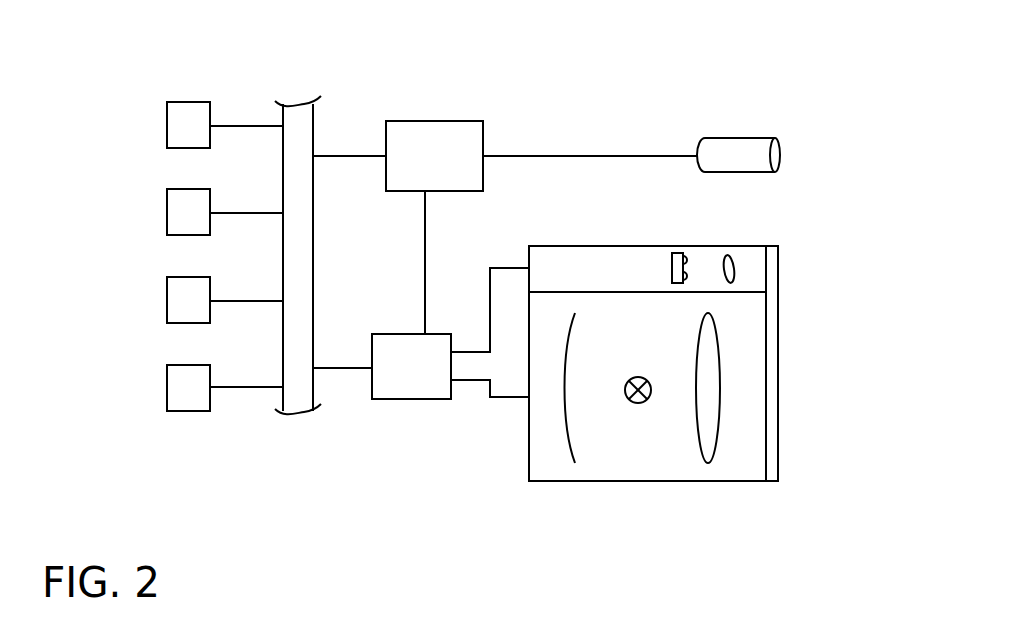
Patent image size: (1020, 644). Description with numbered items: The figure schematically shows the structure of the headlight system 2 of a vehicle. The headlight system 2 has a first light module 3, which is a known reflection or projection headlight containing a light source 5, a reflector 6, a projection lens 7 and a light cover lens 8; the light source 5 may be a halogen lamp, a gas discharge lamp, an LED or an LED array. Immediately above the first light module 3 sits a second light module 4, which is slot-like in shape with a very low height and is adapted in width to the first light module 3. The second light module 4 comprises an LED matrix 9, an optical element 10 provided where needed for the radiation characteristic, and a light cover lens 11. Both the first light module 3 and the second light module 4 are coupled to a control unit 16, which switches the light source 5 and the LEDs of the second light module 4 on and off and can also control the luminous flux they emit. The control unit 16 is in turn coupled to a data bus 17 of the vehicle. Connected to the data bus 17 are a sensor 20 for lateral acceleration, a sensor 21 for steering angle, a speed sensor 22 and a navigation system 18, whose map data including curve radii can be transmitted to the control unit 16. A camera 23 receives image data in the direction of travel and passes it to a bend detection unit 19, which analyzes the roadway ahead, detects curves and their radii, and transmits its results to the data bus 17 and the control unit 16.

The headlight system 2 is at (828, 369).
The first light module 3 is at (752, 462).
The second light module 4 is at (607, 271).
The light source 5 is at (638, 402).
The reflector 6 is at (570, 448).
The projection lens 7 is at (707, 438).
The light cover lens 8 is at (772, 415).
The LED matrix 9 is at (680, 252).
The optical element 10 is at (734, 260).
The light cover lens 11 is at (773, 283).
The control unit 16 is at (412, 388).
The data bus 17 is at (288, 113).
The navigation system 18 is at (182, 392).
The bend detection unit 19 is at (439, 132).
The sensor for the lateral acceleration 20 is at (182, 128).
The sensor for the steering angle 21 is at (182, 213).
The speed sensor 22 is at (182, 302).
The camera 23 is at (737, 153).